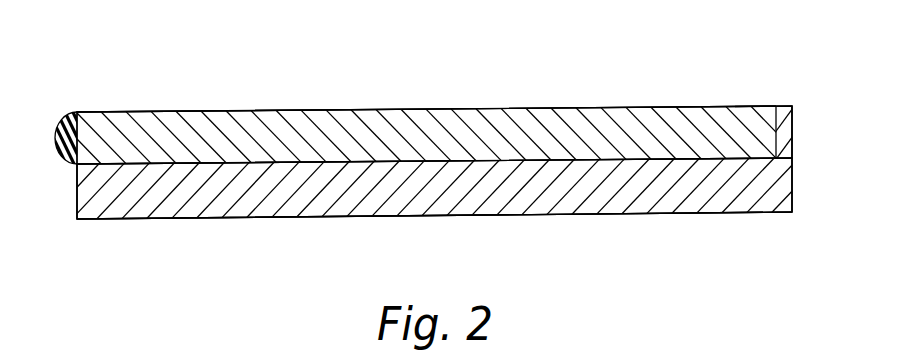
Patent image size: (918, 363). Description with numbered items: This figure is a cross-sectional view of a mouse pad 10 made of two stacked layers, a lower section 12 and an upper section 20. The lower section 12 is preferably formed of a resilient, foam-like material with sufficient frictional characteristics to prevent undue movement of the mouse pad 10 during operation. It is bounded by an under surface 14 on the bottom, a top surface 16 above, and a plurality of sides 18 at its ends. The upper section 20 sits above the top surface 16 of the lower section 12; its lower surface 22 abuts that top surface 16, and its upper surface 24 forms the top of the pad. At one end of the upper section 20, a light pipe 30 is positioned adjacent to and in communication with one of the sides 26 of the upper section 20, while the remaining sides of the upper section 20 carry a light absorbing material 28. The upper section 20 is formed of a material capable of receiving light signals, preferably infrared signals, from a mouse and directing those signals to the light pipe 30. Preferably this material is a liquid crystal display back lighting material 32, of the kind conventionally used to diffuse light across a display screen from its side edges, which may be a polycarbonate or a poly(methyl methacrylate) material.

The mouse pad 10 is at (218, 82).
The lower section 12 is at (670, 208).
The under surface 14 is at (603, 213).
The top surface 16 is at (667, 158).
The sides 18 is at (118, 212).
The upper section 20 is at (510, 123).
The lower surface 22 is at (400, 164).
The upper surface 24 is at (300, 110).
The side of the upper section 26 is at (784, 113).
The light absorbing material 28 is at (785, 145).
The light pipe 30 is at (55, 133).
The LCD back lighting material 32 is at (740, 115).